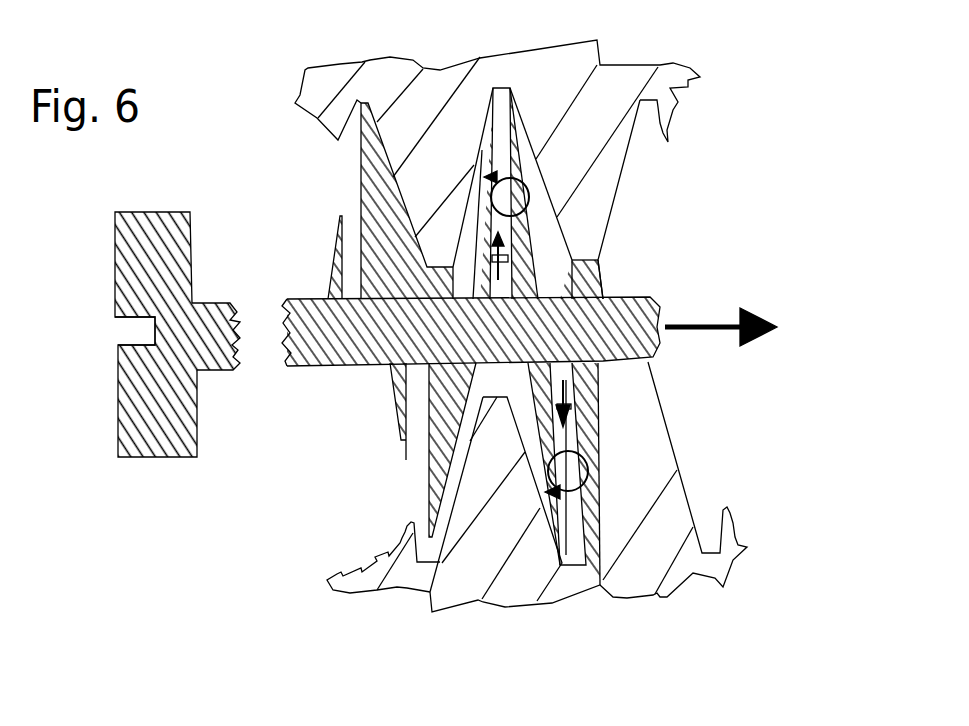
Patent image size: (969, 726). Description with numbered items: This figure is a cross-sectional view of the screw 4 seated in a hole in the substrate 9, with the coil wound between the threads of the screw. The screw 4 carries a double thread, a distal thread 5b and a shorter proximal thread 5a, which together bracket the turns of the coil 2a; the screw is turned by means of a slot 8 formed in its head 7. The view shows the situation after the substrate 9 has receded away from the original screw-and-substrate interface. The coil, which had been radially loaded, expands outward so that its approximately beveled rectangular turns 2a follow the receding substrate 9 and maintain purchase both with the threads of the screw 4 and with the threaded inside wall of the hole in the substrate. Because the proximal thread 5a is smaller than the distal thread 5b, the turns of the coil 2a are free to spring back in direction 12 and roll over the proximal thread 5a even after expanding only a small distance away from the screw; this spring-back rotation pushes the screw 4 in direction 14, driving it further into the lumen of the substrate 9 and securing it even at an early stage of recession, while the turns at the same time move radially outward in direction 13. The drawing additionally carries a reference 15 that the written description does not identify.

The turns of the coil 2a is at (509, 108).
The screw 4 is at (671, 246).
The proximal thread 5a is at (311, 241).
The distal thread 5b is at (344, 205).
The head of the screw 7 is at (212, 430).
The slot 8 is at (103, 343).
The substrate 9 is at (623, 46).
The spring-back direction 12 is at (541, 184).
The radially outward direction 13 is at (588, 395).
The push direction 14 is at (769, 292).
The clearance gap 15 is at (621, 278).